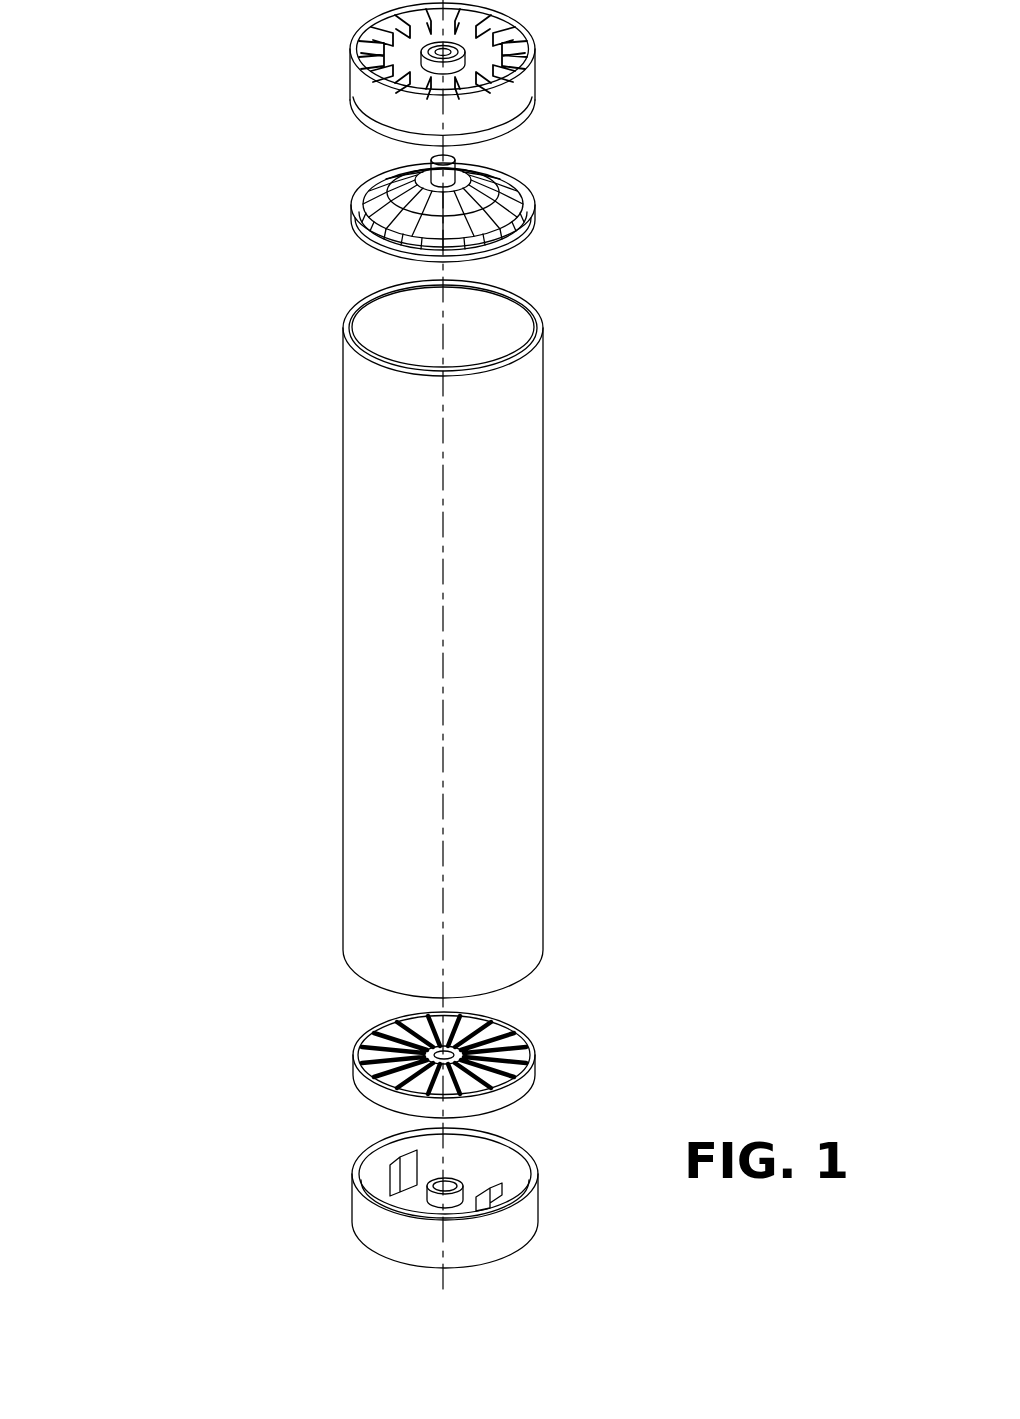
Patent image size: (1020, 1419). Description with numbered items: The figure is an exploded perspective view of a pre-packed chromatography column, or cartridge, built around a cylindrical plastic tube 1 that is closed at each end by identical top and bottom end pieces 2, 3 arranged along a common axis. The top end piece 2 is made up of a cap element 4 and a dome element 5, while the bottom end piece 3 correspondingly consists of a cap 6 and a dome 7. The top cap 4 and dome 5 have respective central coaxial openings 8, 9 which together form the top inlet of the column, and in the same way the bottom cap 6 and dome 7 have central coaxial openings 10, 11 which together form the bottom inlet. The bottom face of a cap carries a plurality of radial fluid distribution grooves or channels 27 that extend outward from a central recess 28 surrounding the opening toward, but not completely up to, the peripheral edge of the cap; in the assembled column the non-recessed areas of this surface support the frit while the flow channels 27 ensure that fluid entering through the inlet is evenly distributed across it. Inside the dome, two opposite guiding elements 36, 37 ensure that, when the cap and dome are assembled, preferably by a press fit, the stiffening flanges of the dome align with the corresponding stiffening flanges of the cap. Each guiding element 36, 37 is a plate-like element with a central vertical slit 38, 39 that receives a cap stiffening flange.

The cylindrical plastic tube 1 is at (510, 555).
The top end piece 2 is at (545, 155).
The bottom end piece 3 is at (346, 1122).
The cap element 4 is at (442, 221).
The dome element 5 is at (430, 74).
The cap 6 is at (410, 1034).
The dome 7 is at (353, 1206).
The central coaxial opening 8 is at (432, 164).
The central coaxial opening 9 is at (495, 47).
The central coaxial opening 10 is at (420, 1050).
The central coaxial opening 11 is at (463, 1182).
The radial fluid distribution grooves 27 is at (507, 1042).
The central recess 28 is at (362, 1063).
The guiding element 36 is at (388, 1180).
The guiding element 37 is at (502, 1187).
The central vertical slit 38 is at (395, 1163).
The central vertical slit 39 is at (490, 1208).